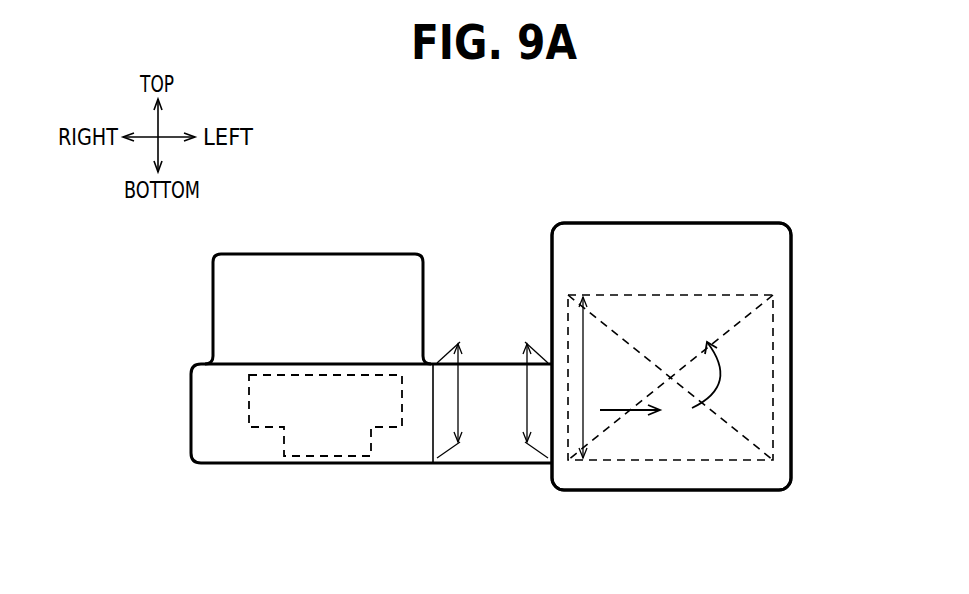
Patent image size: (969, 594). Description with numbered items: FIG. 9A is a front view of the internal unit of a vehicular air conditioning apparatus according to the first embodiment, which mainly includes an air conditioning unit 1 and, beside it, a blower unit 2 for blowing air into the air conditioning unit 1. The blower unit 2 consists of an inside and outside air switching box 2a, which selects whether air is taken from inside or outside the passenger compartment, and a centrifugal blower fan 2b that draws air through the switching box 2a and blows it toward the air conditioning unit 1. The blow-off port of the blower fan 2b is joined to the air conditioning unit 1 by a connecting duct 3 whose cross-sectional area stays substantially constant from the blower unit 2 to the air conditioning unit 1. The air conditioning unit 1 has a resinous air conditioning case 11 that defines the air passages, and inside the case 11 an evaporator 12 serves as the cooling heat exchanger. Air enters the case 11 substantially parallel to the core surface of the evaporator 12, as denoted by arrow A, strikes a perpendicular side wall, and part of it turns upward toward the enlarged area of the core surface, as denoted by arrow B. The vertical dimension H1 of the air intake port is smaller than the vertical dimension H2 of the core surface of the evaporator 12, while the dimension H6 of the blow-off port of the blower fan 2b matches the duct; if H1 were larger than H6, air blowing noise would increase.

The air conditioning unit 1 is at (598, 222).
The air conditioning case 11 is at (793, 272).
The evaporator 12 is at (753, 345).
The blower unit 2 is at (422, 253).
The inside and outside air switching box 2a is at (311, 253).
The centrifugal blower fan 2b is at (379, 443).
The connecting duct 3 is at (488, 362).
The vertical dimension of the air intake port H1 is at (525, 393).
The vertical dimension of the core surface H2 is at (583, 310).
The dimension of the blow off port of the blower fan H6 is at (458, 393).
The arrow A is at (612, 416).
The arrow B is at (725, 383).